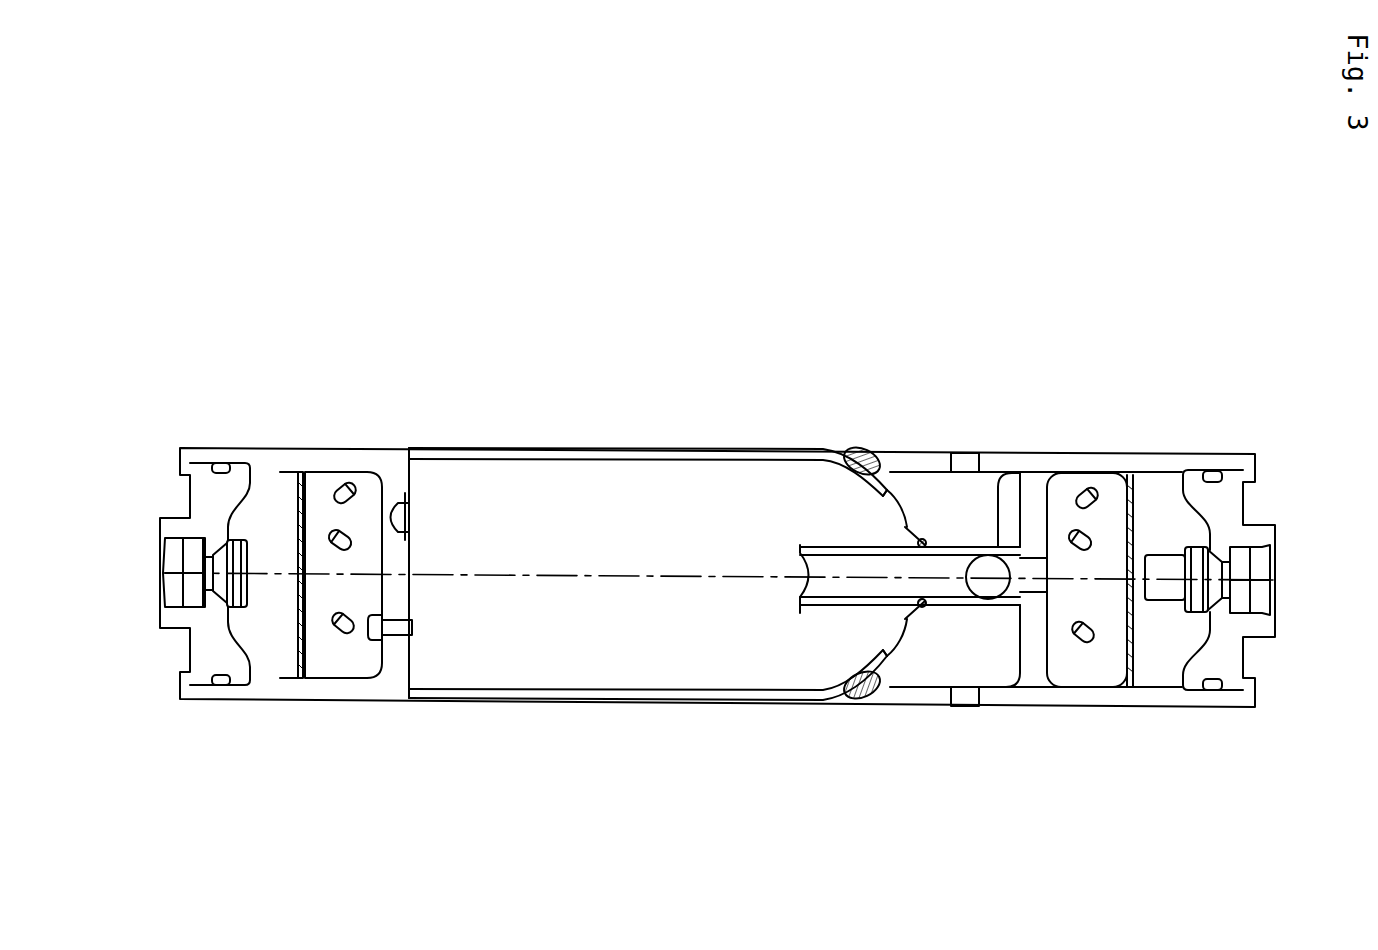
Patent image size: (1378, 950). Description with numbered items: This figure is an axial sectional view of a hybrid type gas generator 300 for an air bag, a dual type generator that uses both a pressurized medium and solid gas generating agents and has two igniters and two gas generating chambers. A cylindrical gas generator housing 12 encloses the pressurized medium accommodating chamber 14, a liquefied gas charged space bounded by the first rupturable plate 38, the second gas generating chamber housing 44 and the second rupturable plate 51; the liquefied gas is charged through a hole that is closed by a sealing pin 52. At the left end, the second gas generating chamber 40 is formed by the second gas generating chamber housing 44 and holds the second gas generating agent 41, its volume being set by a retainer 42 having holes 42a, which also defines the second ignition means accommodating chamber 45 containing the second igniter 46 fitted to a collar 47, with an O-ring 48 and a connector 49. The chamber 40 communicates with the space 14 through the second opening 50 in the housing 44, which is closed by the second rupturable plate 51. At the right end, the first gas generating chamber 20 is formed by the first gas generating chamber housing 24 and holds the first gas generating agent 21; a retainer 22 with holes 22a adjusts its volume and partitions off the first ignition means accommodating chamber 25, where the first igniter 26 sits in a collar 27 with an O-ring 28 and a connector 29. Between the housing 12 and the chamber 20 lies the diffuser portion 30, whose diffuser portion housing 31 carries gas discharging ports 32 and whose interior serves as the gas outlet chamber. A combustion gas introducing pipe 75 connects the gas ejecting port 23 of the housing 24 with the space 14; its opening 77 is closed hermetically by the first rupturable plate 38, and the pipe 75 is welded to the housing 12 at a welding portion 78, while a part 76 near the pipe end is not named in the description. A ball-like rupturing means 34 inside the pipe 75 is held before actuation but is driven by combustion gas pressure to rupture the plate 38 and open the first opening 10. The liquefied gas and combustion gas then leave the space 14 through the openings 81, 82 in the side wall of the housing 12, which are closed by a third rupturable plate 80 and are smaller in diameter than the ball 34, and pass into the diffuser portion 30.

The hybrid type gas generator 300 is at (542, 432).
The gas generator housing 12 is at (622, 449).
The pressurized medium accommodating chamber 14 is at (690, 537).
The first opening 10 is at (799, 545).
The second gas generating chamber housing 44 is at (360, 457).
The second opening 50 is at (388, 500).
The retainer 42 is at (297, 497).
The second gas generating agent 41 is at (333, 490).
The collar 47 is at (205, 500).
The connector 49 is at (176, 557).
The second ignition means accommodating chamber 45 is at (180, 650).
The O-ring 48 is at (221, 685).
The second igniter 46 is at (267, 590).
The holes 42a is at (285, 597).
The second gas generating chamber 40 is at (350, 660).
The sealing pin 52 is at (396, 632).
The second rupturable plate 51 is at (392, 520).
The first rupturable plate 38 is at (793, 582).
The combustion gas introducing pipe 75 is at (820, 613).
The opening 77 is at (790, 550).
The opening 82 is at (907, 527).
The third rupturable plate 80 is at (905, 508).
The diffuser portion 30 is at (931, 442).
The ball-like rupturing means 34 is at (981, 567).
The rod end 76 is at (1006, 557).
The welding portion 78 is at (925, 605).
The opening 81 is at (865, 690).
The diffuser portion housing 31 is at (937, 705).
The gas discharging ports 32 is at (968, 707).
The gas ejecting port 23 is at (1028, 597).
The first gas generating chamber 20 is at (1072, 665).
The retainer 22 is at (1113, 473).
The first gas generating agent 21 is at (1078, 490).
The holes 22a is at (1124, 603).
The first gas generating chamber housing 24 is at (1157, 694).
The first igniter 26 is at (1166, 562).
The collar 27 is at (1223, 508).
The connector 29 is at (1258, 559).
The O-ring 28 is at (1212, 691).
The first ignition means accommodating chamber 25 is at (1257, 674).